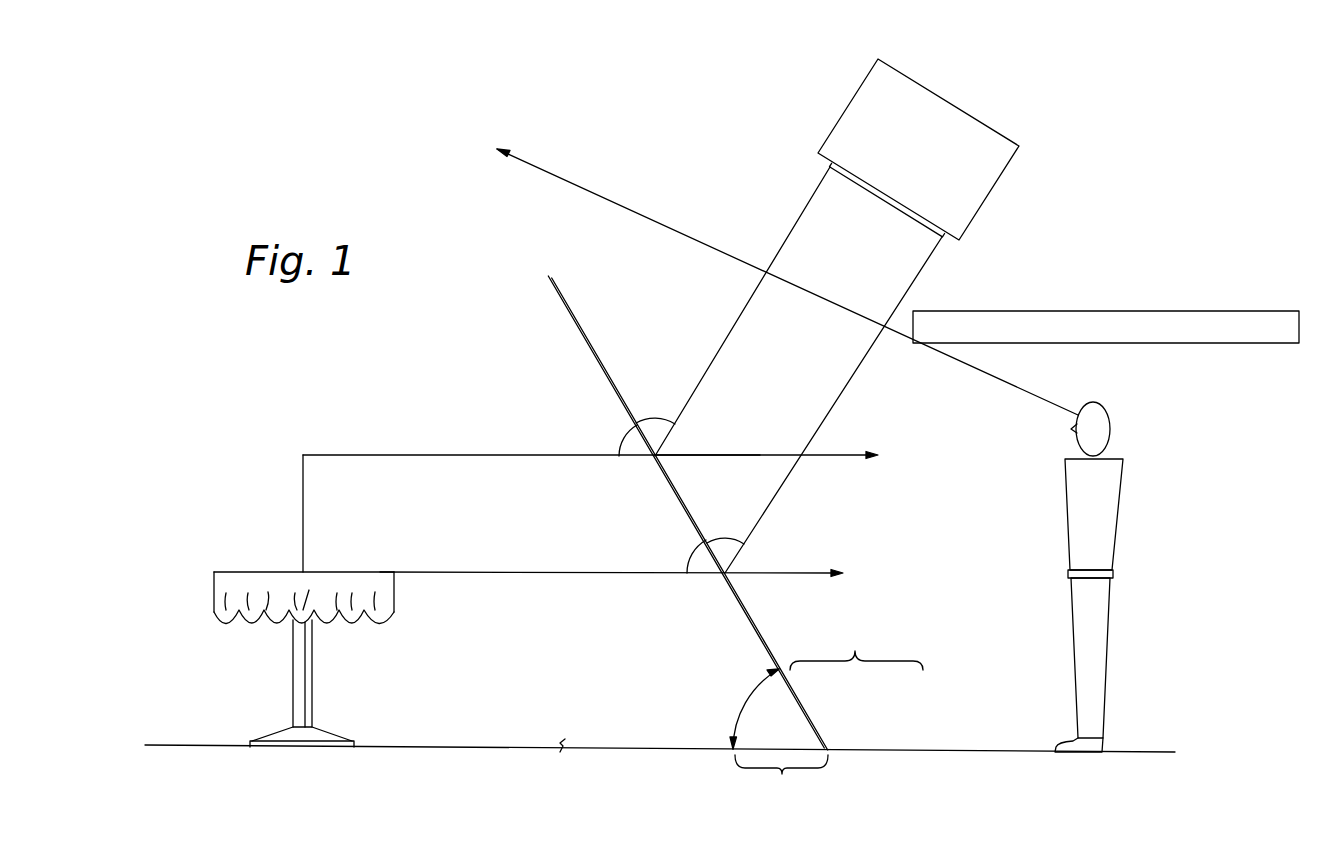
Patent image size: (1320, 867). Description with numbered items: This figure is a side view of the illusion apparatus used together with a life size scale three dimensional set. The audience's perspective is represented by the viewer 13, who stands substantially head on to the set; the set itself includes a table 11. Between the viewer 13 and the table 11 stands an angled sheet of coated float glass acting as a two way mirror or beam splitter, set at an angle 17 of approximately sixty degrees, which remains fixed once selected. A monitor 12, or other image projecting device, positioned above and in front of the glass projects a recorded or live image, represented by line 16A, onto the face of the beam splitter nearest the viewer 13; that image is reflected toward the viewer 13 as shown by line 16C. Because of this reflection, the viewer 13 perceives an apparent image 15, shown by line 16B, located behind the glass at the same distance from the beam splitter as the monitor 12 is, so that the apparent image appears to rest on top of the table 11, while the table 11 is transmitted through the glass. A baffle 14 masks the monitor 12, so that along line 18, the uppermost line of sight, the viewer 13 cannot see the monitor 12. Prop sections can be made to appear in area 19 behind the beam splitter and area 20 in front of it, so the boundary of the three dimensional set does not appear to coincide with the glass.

The table 11 is at (312, 683).
The monitor 12 is at (982, 130).
The viewer 13 is at (1104, 586).
The baffle 14 is at (1110, 313).
The apparent image 15 is at (303, 481).
The line representing the projected image 16A is at (734, 328).
The line representing the apparent image 16B is at (503, 455).
The line representing the reflected image 16C is at (763, 456).
The angle 17 is at (742, 700).
The uppermost line of sight 18 is at (647, 222).
The area behind the beam splitter 19 is at (782, 776).
The area in front of the beam splitter 20 is at (855, 650).